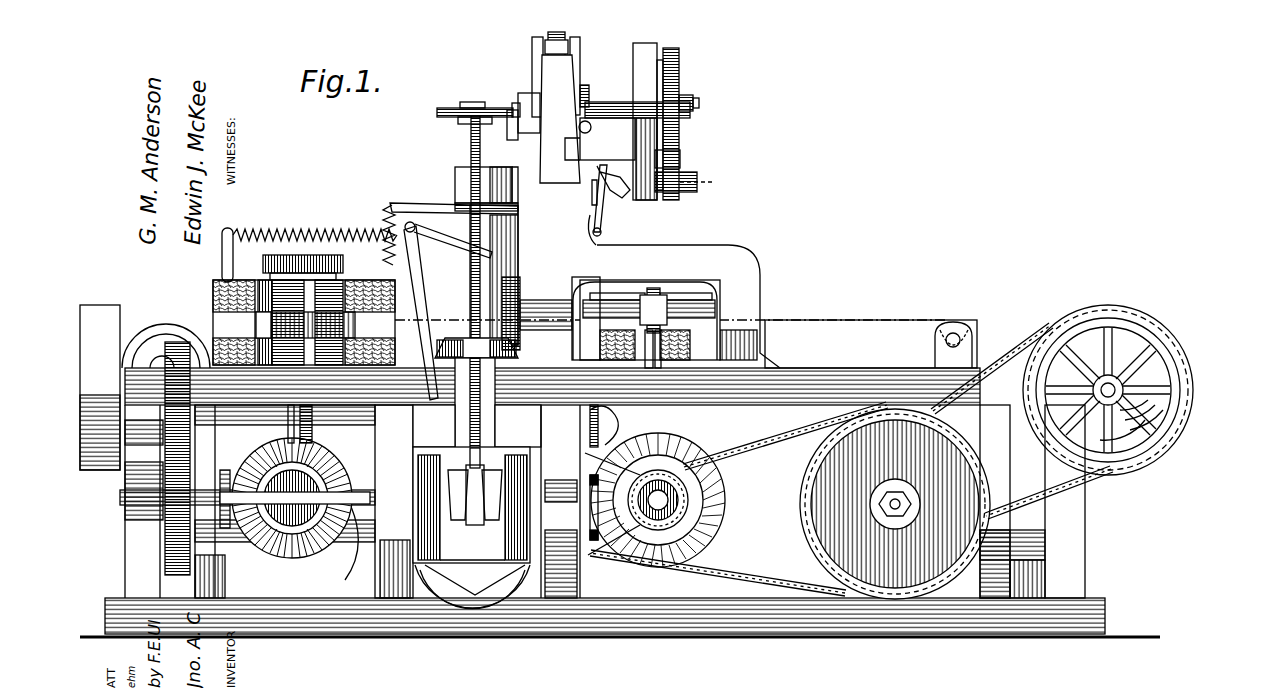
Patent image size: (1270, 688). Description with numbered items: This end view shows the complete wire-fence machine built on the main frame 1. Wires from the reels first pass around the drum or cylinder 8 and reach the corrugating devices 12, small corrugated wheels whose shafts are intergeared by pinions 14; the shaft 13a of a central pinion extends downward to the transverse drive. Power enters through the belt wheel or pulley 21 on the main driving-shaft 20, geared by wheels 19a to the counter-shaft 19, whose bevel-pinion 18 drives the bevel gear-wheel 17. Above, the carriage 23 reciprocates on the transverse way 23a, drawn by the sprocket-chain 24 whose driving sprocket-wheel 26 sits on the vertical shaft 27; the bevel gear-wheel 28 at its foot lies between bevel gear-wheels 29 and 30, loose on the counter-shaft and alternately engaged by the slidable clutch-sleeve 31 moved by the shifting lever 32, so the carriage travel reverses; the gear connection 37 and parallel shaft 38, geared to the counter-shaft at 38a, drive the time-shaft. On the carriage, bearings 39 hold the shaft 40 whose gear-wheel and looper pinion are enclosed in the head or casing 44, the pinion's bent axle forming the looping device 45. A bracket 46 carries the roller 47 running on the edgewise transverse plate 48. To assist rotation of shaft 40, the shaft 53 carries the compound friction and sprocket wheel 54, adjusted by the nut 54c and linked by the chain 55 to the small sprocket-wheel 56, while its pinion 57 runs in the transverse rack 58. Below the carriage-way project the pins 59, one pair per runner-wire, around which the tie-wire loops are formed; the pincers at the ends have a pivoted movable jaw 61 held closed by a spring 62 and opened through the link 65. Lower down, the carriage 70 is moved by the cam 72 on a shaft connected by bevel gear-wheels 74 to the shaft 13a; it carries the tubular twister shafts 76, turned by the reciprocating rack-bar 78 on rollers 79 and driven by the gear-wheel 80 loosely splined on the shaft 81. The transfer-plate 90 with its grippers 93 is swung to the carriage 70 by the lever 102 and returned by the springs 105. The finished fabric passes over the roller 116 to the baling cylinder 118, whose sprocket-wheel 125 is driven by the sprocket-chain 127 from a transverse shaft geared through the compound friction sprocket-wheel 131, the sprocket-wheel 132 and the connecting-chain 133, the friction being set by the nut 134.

The main frame 1 is at (280, 610).
The drum or cylinder 8 is at (157, 328).
The corrugating devices 12 is at (350, 328).
The pinion shaft 13a is at (288, 418).
The pinions 14 is at (300, 264).
The bevel gear-wheel 17 is at (338, 478).
The bevel-pinion 18 is at (226, 470).
The counter-shaft 19 is at (247, 536).
The gear wheels 19a is at (186, 398).
The main driving-shaft 20 is at (212, 385).
The belt wheel or pulley 21 is at (100, 387).
The carriage 23 is at (517, 147).
The transverse way or guide 23a is at (578, 187).
The sprocket-chain 24 is at (437, 112).
The sprocket-wheel 26 is at (458, 121).
The vertical shaft 27 is at (465, 243).
The bevel gear-wheel 28 is at (533, 446).
The bevel gear-wheel 29 is at (413, 522).
The bevel gear-wheel 30 is at (530, 560).
The slidable clutch-sleeve 31 is at (432, 555).
The shifting lever 32 is at (470, 585).
The shaft 37 is at (500, 585).
The parallel shaft 38 is at (690, 500).
The gearing 38a is at (618, 548).
The bearings 39 is at (518, 100).
The shaft 40 is at (585, 160).
The head or casing 44 is at (640, 172).
The looping device 45 is at (590, 182).
The bracket 46 is at (532, 47).
The roller 47 is at (562, 40).
The transverse plate 48 is at (555, 70).
The shaft 53 is at (609, 102).
The compound friction and sprocket wheel 54 is at (682, 156).
The nut 54c is at (693, 108).
The chain 55 is at (680, 70).
The small sprocket-wheel 56 is at (680, 192).
The pinion 57 is at (586, 85).
The transverse rack 58 is at (580, 128).
The pins 59 is at (603, 200).
The movable jaw 61 is at (420, 207).
The spring 62 is at (386, 222).
The link 65 is at (502, 222).
The carriage 70 is at (700, 366).
The cam 72 is at (607, 426).
The bevel gear-wheels 74 is at (312, 425).
The tubular shafts 76 is at (596, 328).
The rack-bar 78 is at (652, 370).
The rollers 79 is at (660, 370).
The gear-wheel 80 is at (656, 290).
The shaft 81 is at (690, 298).
The transfer-plate 90 is at (590, 205).
The grippers 93 is at (608, 220).
The lever 102 is at (425, 245).
The springs 105 is at (318, 218).
The roller 116 is at (940, 343).
The baling roll or cylinder 118 is at (1150, 405).
The sprocket-wheel 125 is at (1172, 365).
The sprocket-chain 127 is at (1150, 322).
The compound sprocket-wheel 131 is at (975, 455).
The sprocket-wheel 132 is at (712, 460).
The connecting-chain 133 is at (755, 567).
The nut 134 is at (880, 503).